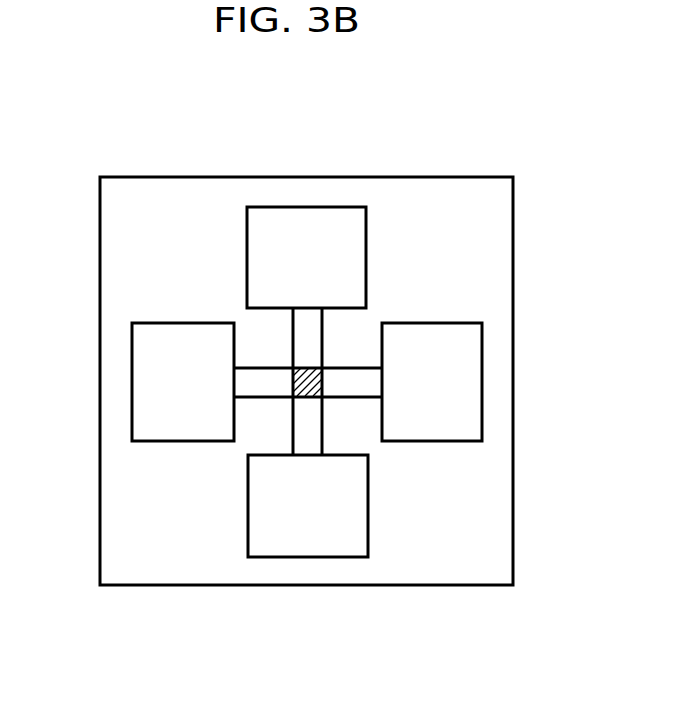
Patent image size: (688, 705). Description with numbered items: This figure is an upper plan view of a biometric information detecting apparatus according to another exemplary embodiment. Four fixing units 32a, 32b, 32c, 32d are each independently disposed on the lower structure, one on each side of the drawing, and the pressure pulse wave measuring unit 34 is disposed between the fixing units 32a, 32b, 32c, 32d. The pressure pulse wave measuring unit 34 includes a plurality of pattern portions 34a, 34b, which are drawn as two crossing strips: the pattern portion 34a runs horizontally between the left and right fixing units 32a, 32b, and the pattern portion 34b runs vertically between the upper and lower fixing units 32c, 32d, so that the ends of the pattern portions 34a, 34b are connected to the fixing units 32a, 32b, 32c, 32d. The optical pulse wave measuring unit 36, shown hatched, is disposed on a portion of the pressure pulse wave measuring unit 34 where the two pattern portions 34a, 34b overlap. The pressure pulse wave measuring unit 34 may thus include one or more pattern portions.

The fixing unit 32a is at (142, 380).
The fixing unit 32b is at (472, 385).
The fixing unit 32c is at (309, 215).
The fixing unit 32d is at (307, 547).
The pressure pulse wave measuring unit 34 is at (274, 497).
The pattern portion 34a is at (253, 387).
The pattern portion 34b is at (297, 428).
The optical pulse wave measuring unit 36 is at (320, 380).